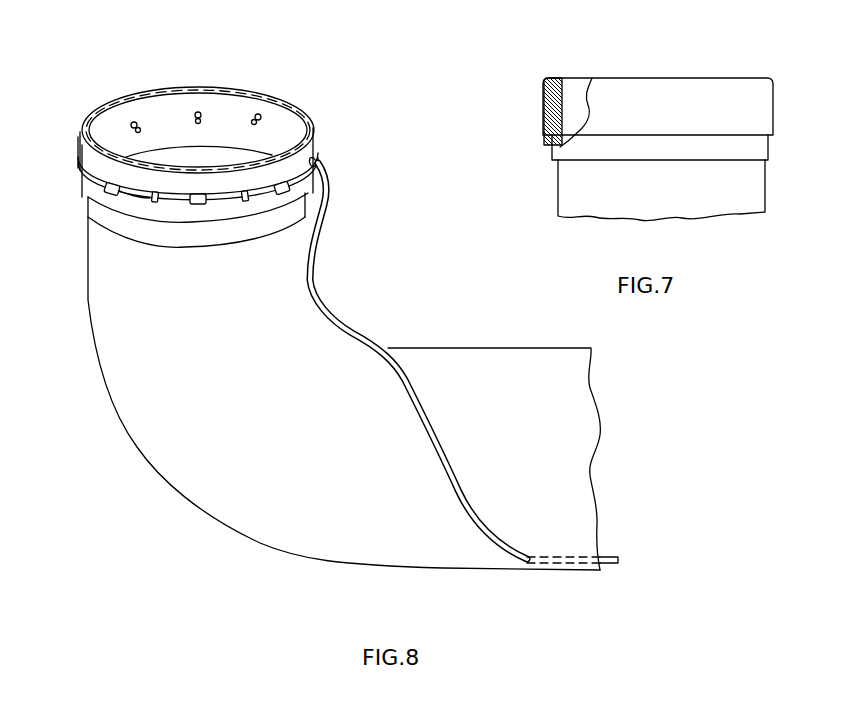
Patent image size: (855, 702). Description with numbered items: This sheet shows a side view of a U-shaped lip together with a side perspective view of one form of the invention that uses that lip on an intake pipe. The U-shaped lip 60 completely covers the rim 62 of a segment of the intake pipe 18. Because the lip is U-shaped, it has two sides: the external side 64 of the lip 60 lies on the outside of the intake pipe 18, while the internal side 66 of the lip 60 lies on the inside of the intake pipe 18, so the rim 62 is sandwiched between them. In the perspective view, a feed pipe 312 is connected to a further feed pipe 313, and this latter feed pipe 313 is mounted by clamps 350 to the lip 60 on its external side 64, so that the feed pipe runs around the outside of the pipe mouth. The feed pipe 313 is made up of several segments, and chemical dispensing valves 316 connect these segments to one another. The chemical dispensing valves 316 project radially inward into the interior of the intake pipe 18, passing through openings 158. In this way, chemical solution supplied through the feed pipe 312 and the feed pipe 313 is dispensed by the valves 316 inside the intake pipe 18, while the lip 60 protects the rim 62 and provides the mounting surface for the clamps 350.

In FIG. 8, the intake pipe 18 is at (133, 383).
In FIG. 7, the intake pipe 18 is at (753, 190).
In FIG. 8, the U-shaped lip 60 is at (310, 110).
In FIG. 7, the U-shaped lip 60 is at (548, 78).
In FIG. 8, the rim 62 is at (303, 143).
In FIG. 7, the rim 62 is at (722, 78).
In FIG. 8, the external side 64 is at (277, 220).
In FIG. 7, the external side 64 is at (543, 110).
In FIG. 8, the internal side 66 is at (243, 107).
In FIG. 7, the internal side 66 is at (565, 105).
In FIG. 8, the openings 158 is at (133, 123).
In FIG. 8, the feed pipe 312 is at (447, 459).
In FIG. 8, the feed pipe 313 is at (133, 197).
In FIG. 8, the chemical dispensing valves 316 is at (198, 113).
In FIG. 8, the clamps 350 is at (150, 188).